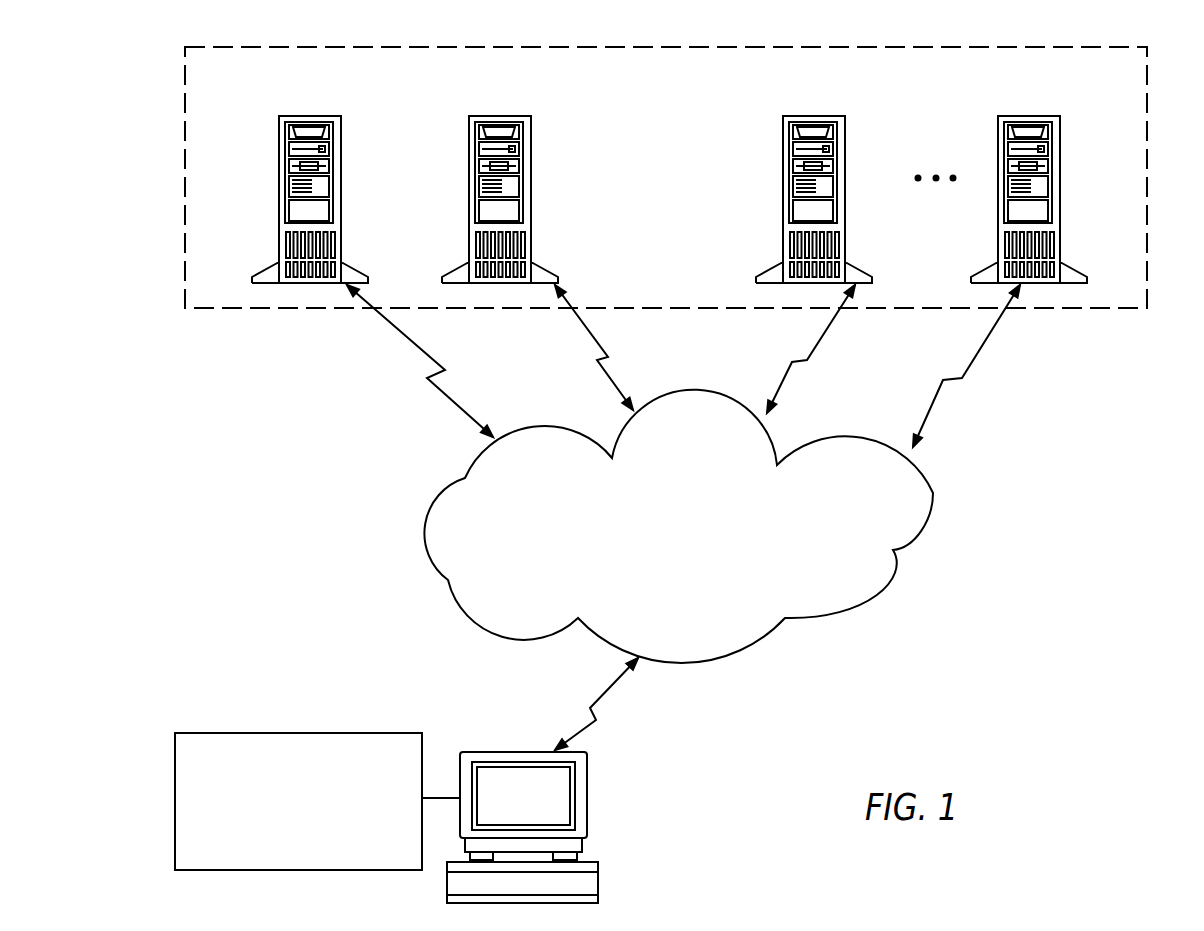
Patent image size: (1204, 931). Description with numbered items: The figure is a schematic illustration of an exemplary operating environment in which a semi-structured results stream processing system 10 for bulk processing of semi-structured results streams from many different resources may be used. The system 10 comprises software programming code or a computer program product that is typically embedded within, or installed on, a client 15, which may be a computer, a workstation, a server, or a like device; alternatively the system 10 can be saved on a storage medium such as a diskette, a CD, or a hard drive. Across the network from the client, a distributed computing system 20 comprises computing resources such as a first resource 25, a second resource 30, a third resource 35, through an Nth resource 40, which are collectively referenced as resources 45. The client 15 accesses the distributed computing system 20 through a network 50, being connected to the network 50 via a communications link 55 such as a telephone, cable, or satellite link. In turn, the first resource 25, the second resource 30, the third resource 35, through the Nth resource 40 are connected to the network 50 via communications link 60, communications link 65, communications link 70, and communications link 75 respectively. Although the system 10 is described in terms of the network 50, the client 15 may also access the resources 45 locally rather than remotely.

The system 10 is at (260, 732).
The client 15 is at (587, 783).
The distributed computing system 20 is at (1047, 318).
The resource 1 25 is at (279, 157).
The resource 2 30 is at (469, 158).
The resource 3 35 is at (847, 153).
The resource N 40 is at (1061, 155).
The resources 45 is at (1102, 300).
The network 50 is at (932, 503).
The communications link 55 is at (618, 690).
The communications link 60 is at (418, 353).
The communications link 65 is at (588, 322).
The communications link 70 is at (815, 330).
The communications link 75 is at (968, 352).